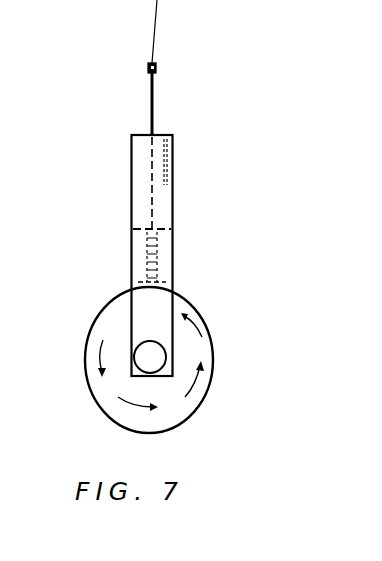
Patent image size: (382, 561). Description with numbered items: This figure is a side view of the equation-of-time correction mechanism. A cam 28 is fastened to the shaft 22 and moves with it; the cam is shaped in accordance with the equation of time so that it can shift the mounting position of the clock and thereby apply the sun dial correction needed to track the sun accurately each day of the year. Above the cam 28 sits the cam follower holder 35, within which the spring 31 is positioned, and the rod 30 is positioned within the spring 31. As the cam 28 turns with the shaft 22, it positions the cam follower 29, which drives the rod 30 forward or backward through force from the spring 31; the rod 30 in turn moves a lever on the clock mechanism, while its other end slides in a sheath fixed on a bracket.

The rod 30 is at (153, 37).
The cam follower 29 is at (157, 110).
The cam follower holder 35 is at (164, 185).
The spring 31 is at (160, 248).
The cam 28 is at (187, 398).
The shaft 22 is at (152, 357).